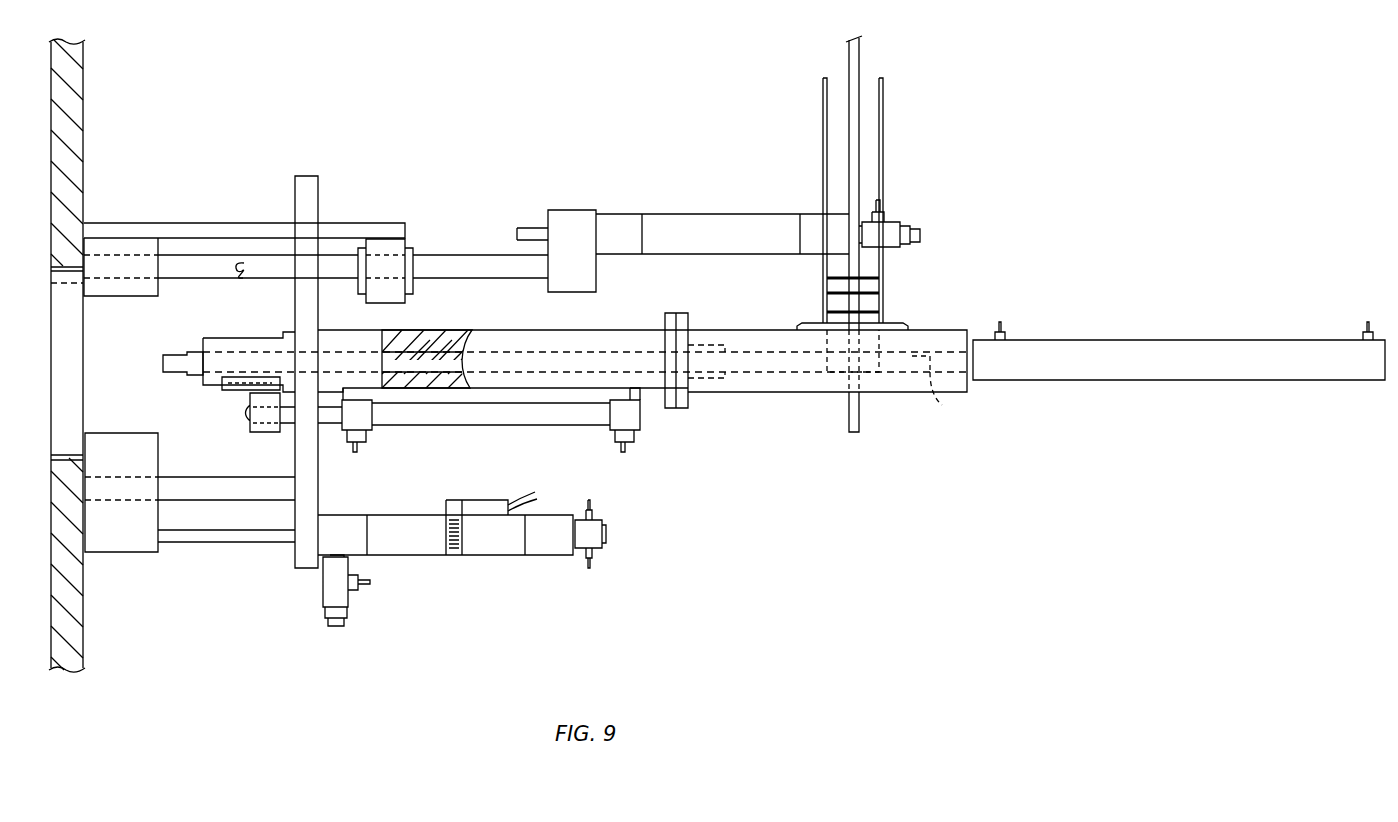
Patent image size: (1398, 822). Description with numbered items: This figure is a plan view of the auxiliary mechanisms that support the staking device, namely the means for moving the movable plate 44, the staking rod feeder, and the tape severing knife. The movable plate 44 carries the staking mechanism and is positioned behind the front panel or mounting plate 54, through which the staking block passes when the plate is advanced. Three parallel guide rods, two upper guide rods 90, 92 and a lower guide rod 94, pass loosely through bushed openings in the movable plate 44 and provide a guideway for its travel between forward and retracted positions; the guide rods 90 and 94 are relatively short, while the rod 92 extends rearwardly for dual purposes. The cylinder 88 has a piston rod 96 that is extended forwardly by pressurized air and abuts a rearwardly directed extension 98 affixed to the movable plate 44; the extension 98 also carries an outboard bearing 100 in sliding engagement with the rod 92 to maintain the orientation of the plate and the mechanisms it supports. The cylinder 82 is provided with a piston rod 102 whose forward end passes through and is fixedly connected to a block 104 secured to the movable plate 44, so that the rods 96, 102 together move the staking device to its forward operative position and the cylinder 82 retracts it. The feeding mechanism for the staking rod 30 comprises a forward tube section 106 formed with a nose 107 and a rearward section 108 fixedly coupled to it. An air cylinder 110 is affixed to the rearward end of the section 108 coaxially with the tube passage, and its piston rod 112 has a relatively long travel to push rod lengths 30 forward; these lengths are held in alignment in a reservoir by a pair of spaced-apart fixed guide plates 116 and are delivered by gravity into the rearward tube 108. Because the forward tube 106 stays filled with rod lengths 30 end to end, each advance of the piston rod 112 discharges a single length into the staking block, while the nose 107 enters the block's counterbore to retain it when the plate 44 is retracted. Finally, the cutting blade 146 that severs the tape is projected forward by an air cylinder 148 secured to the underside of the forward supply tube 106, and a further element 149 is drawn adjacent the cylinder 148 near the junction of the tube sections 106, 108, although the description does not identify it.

The front panel 54 is at (84, 113).
The movable plate 44 is at (52, 332).
The rearwardly directed extension 98 is at (394, 222).
The upper guide rod 90 is at (200, 262).
The outboard bearing 100 is at (412, 246).
The upper guide rod 92 is at (493, 270).
The piston rod 96 is at (527, 228).
The cylinder 88 is at (738, 196).
The fixed guide plates 116 is at (822, 132).
The staking rod 30 is at (172, 362).
The nose 107 is at (196, 375).
The forward tube section 106 is at (570, 336).
The cutting blade 146 is at (233, 388).
The air cylinder 148 is at (542, 418).
The collar 149 is at (640, 396).
The rearward section 108 is at (774, 394).
The piston rod 112 is at (948, 389).
The air cylinder 110 is at (1168, 340).
The block 104 is at (124, 553).
The lower guide rod 94 is at (212, 502).
The piston rod 102 is at (266, 543).
The cylinder 82 is at (422, 556).